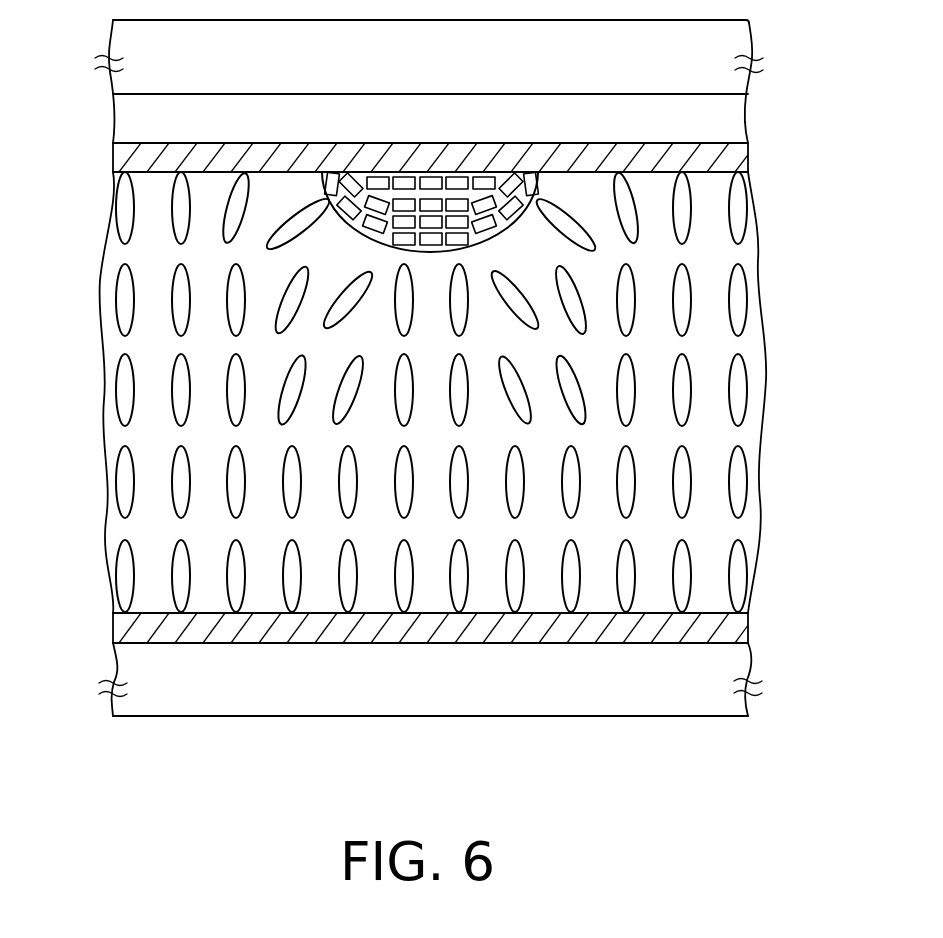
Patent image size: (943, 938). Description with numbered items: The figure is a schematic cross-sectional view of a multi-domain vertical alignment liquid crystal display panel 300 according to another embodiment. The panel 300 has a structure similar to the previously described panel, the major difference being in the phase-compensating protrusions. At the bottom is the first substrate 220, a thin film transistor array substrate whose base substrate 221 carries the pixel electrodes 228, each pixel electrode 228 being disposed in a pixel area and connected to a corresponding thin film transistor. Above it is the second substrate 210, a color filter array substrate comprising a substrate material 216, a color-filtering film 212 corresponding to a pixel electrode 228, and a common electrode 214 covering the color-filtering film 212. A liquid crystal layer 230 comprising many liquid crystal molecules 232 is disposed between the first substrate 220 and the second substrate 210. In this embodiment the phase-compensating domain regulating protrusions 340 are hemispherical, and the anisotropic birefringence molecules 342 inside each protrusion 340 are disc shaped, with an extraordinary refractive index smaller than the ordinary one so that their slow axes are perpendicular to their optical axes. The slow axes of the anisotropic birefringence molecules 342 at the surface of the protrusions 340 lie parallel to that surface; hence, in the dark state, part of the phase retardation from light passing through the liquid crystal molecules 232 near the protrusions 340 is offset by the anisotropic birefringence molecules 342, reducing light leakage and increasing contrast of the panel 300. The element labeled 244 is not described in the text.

The second substrate 210 is at (86, 22).
The substrate material 216 is at (731, 40).
The color-filtering film 212 is at (733, 117).
The common electrode 214 is at (733, 162).
The first substrate 220 is at (86, 613).
The pixel electrode 228 is at (720, 637).
The substrate 221 is at (730, 707).
The liquid crystal layer 230 is at (113, 350).
The liquid crystal molecule 232 is at (733, 302).
The protrusion 244 is at (352, 228).
The phase-compensating domain regulating protrusion 340 is at (334, 200).
The anisotropic birefringence molecule 342 is at (540, 180).
The MVA liquid crystal display panel 300 is at (831, 775).